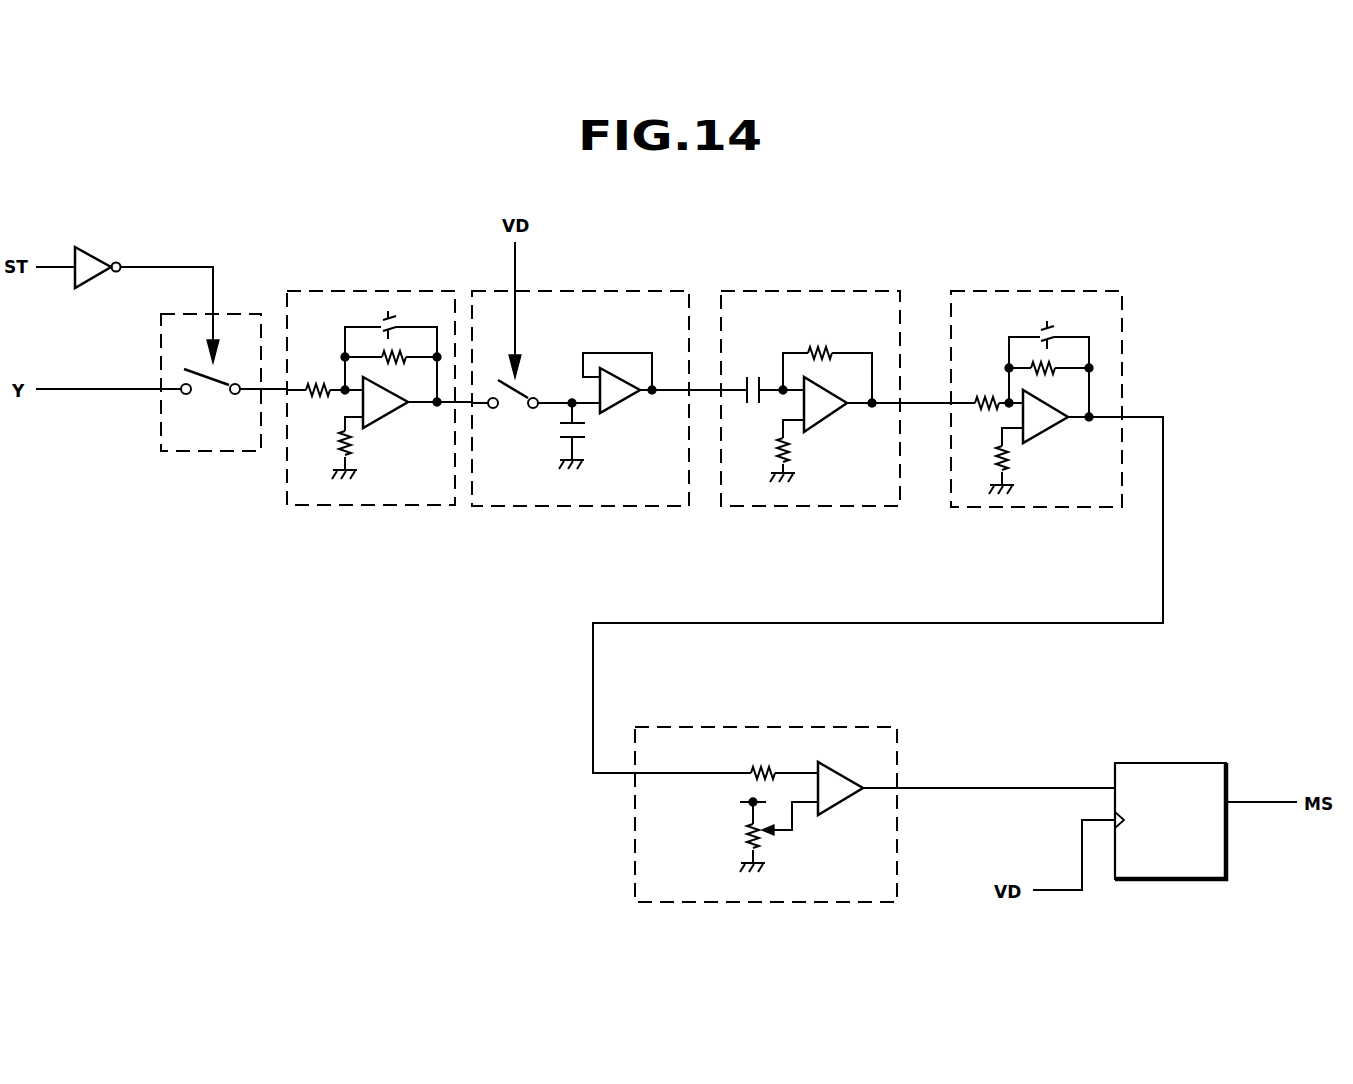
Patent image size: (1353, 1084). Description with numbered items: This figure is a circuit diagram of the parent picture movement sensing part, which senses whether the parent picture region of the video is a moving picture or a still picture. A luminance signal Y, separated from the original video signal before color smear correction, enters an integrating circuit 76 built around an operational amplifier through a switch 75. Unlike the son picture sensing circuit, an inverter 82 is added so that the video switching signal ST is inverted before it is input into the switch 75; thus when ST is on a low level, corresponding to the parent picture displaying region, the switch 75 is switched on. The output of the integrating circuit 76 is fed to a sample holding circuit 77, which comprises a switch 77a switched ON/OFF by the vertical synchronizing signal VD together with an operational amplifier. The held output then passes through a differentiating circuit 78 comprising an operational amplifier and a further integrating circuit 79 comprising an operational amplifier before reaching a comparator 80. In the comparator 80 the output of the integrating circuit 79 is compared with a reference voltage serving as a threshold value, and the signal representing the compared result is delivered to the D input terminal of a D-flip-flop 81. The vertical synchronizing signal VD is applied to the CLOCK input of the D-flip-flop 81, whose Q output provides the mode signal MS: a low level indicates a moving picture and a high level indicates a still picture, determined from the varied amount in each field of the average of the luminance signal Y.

The switch 75 is at (208, 452).
The integrating circuit 76 is at (369, 290).
The sample holding circuit 77 is at (596, 398).
The switch 77a is at (512, 411).
The differentiating circuit 78 is at (813, 290).
The integrating circuit 79 is at (1038, 290).
The comparator 80 is at (772, 727).
The D-flip-flop 81 is at (1164, 762).
The inverter 82 is at (94, 252).